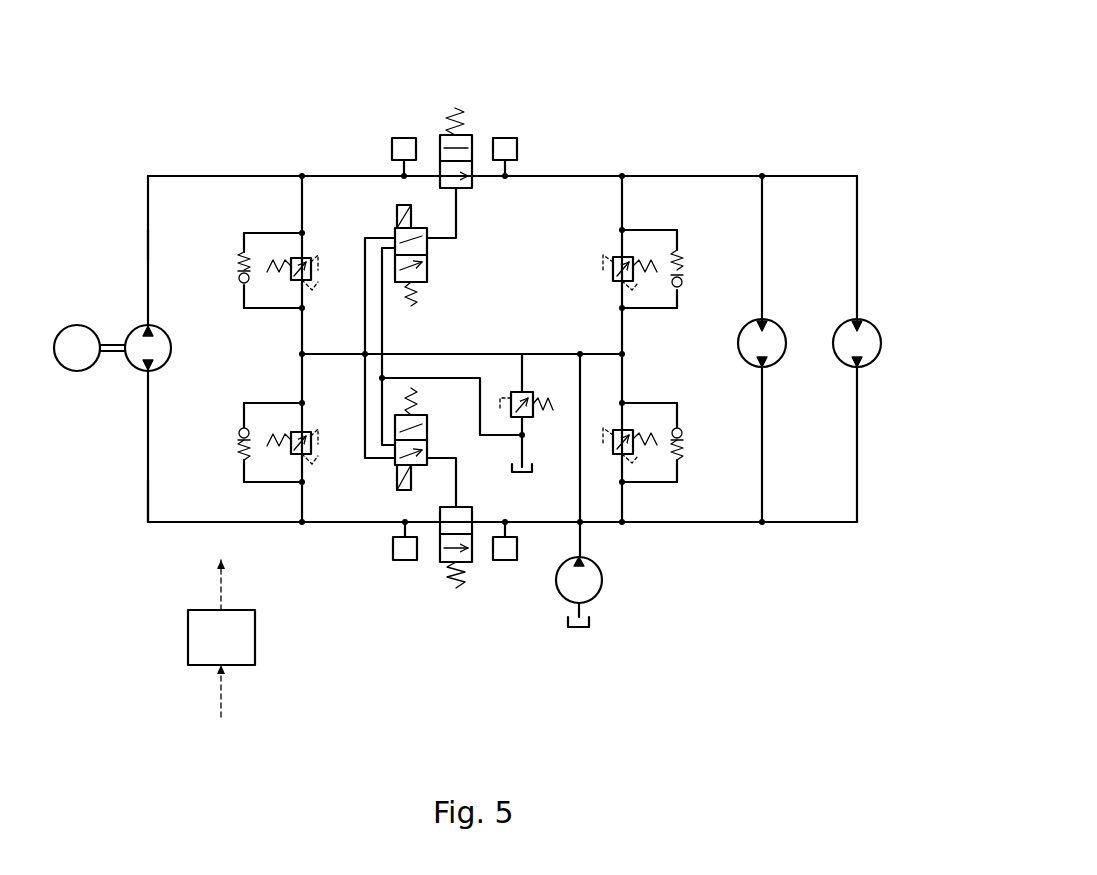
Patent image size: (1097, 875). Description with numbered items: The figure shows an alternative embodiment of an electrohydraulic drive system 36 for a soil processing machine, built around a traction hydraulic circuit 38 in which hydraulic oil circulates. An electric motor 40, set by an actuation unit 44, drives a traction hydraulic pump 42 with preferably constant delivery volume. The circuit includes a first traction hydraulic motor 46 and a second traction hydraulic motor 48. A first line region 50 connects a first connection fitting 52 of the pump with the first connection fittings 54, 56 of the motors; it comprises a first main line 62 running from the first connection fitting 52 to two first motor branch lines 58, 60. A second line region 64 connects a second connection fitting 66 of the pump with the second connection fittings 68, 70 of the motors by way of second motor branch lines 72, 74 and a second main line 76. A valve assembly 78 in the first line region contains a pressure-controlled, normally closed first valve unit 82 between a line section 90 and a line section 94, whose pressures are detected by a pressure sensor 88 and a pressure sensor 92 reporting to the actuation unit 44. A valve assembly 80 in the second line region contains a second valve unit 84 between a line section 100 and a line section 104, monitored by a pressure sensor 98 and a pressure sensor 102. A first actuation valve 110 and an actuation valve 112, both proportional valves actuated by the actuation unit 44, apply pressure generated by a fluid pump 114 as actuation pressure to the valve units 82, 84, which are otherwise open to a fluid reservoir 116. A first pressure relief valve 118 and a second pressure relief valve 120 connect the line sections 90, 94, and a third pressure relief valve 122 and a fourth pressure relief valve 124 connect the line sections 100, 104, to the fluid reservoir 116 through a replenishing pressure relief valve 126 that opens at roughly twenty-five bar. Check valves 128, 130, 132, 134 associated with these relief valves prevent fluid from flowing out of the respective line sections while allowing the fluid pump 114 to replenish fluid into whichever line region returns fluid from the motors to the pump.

The electrohydraulic drive system 36 is at (786, 76).
The traction hydraulic circuit 38 is at (845, 108).
The electric motor 40 is at (70, 325).
The traction hydraulic pump 42 is at (142, 372).
The actuation unit 44 is at (188, 650).
The first traction hydraulic motor 46 is at (780, 322).
The second traction hydraulic motor 48 is at (880, 328).
The first line region 50 is at (168, 174).
The first connection fitting of the traction hydraulic pump 52 is at (150, 342).
The first connection fitting of the first traction hydraulic motor 54 is at (760, 322).
The first connection fitting of the second traction hydraulic motor 56 is at (860, 322).
The first motor branch line 58 is at (763, 215).
The first motor branch line 60 is at (858, 212).
The first main line 62 is at (150, 250).
The second line region 64 is at (157, 527).
The second connection fitting of the traction hydraulic pump 66 is at (152, 370).
The second connection fitting of the first traction hydraulic motor 68 is at (765, 368).
The second connection fitting of the second traction hydraulic motor 70 is at (860, 368).
The second motor branch line 72 is at (763, 447).
The second motor branch line 74 is at (858, 447).
The second main line 76 is at (150, 510).
The valve assembly 78 is at (490, 234).
The valve assembly 80 is at (425, 630).
The first valve unit 82 is at (472, 135).
The second valve unit 84 is at (476, 565).
The pressure sensor 88 is at (392, 138).
The line section 90 is at (148, 215).
The pressure sensor 92 is at (517, 140).
The line section 94 is at (693, 176).
The pressure sensor 98 is at (393, 562).
The line section 100 is at (146, 460).
The pressure sensor 102 is at (509, 562).
The line section 104 is at (745, 524).
The first actuation valve 110 is at (430, 278).
The actuation valve 112 is at (395, 470).
The fluid pump 114 is at (602, 582).
The fluid reservoir 116 is at (536, 474).
The first pressure relief valve 118 is at (256, 225).
The second pressure relief valve 120 is at (645, 222).
The third pressure relief valve 122 is at (262, 493).
The fourth pressure relief valve 124 is at (666, 490).
The replenishing pressure relief valve 126 is at (524, 390).
The check valve 128 is at (233, 235).
The check valve 130 is at (688, 250).
The check valve 132 is at (234, 422).
The check valve 134 is at (694, 438).